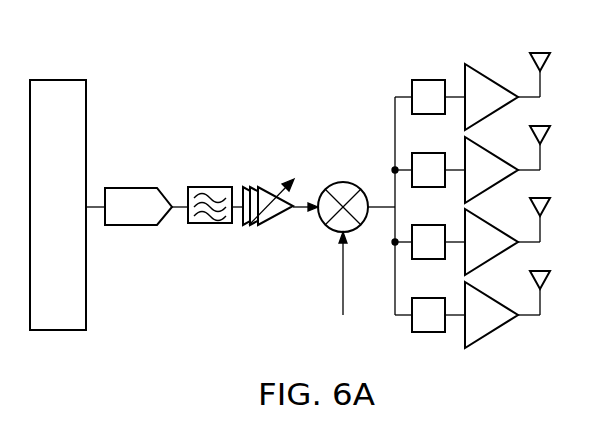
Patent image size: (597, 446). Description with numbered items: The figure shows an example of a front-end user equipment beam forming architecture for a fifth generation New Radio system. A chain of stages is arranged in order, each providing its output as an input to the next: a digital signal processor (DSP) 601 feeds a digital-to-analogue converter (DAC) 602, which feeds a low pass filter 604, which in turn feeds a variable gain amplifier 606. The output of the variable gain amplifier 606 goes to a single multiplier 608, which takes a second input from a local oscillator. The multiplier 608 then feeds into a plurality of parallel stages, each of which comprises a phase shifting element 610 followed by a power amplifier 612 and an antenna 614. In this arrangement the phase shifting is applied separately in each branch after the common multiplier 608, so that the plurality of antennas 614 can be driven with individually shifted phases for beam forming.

The digital signal processor 601 is at (52, 317).
The digital-to-analogue converter 602 is at (135, 223).
The low pass filter 604 is at (214, 187).
The variable gain amplifier 606 is at (278, 216).
The multiplier 608 is at (343, 183).
The phase shifting element 610 is at (430, 80).
The power amplifier 612 is at (472, 63).
The antenna 614 is at (542, 52).